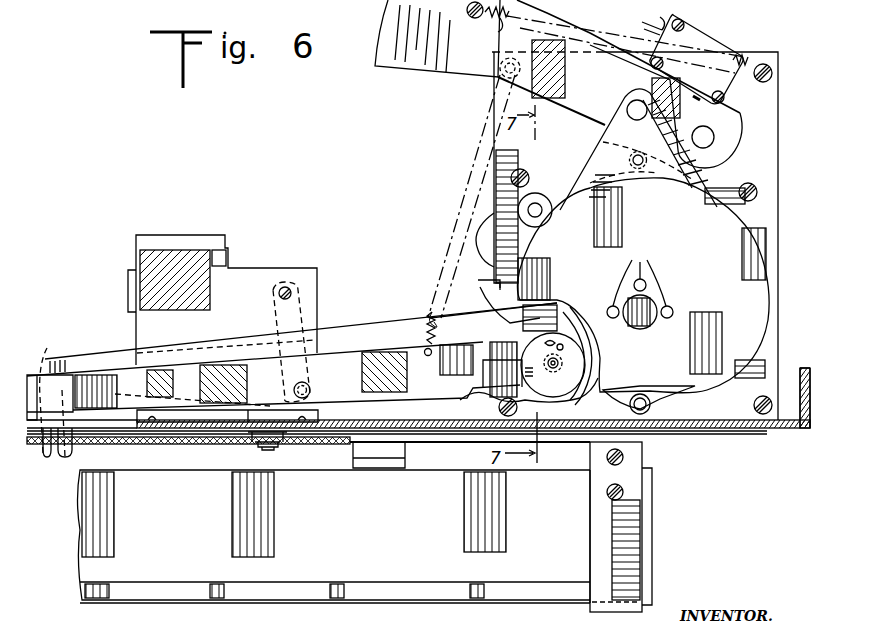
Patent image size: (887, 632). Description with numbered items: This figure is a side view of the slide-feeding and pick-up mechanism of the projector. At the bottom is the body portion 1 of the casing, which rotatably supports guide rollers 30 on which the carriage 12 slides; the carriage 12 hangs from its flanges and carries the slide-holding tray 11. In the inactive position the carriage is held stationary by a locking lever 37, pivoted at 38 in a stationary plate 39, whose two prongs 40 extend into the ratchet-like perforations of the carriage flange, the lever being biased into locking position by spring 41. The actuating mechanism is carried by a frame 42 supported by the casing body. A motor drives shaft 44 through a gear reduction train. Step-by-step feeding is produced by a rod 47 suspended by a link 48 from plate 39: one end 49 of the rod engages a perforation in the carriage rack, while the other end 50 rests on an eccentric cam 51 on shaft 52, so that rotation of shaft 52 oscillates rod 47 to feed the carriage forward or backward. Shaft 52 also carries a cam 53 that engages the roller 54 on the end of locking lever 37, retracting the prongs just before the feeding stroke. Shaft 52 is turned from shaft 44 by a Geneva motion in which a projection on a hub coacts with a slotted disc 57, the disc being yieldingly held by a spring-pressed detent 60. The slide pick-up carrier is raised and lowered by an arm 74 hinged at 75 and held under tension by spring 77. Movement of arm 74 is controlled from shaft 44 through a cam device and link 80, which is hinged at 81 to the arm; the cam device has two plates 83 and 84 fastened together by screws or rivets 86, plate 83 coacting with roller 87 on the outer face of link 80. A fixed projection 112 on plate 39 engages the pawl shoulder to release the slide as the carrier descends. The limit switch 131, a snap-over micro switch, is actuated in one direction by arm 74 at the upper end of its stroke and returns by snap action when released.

The body portion 1 is at (782, 427).
The slide-holding tray 11 is at (378, 534).
The carriage 12 is at (633, 532).
The guide rollers 30 is at (280, 447).
The locking lever 37 is at (353, 360).
The pivot 38 is at (310, 386).
The stationary plate 39 is at (252, 280).
The prongs 40 is at (68, 457).
The spring 41 is at (472, 210).
The frame 42 is at (767, 133).
The shaft 44 is at (643, 322).
The rod 47 is at (390, 340).
The link 48 is at (318, 292).
The end of rod 49 is at (50, 393).
The end of rod 50 is at (600, 370).
The eccentric cam 51 is at (573, 373).
The shaft 52 is at (567, 353).
The cam 53 is at (563, 317).
The roller 54 is at (523, 373).
The slotted disc 57 is at (483, 247).
The spring-pressed detent 60 is at (540, 204).
The arm 74 is at (424, 62).
The hinge 75 is at (714, 135).
The spring 77 is at (566, 24).
The link 80 is at (615, 158).
The hinge 81 is at (627, 107).
The cam plate 83 is at (727, 230).
The cam plate 84 is at (693, 190).
The screws or rivets 86 is at (640, 280).
The roller 87 is at (623, 141).
The fixed projection 112 is at (128, 300).
The limit switch 131 is at (705, 42).